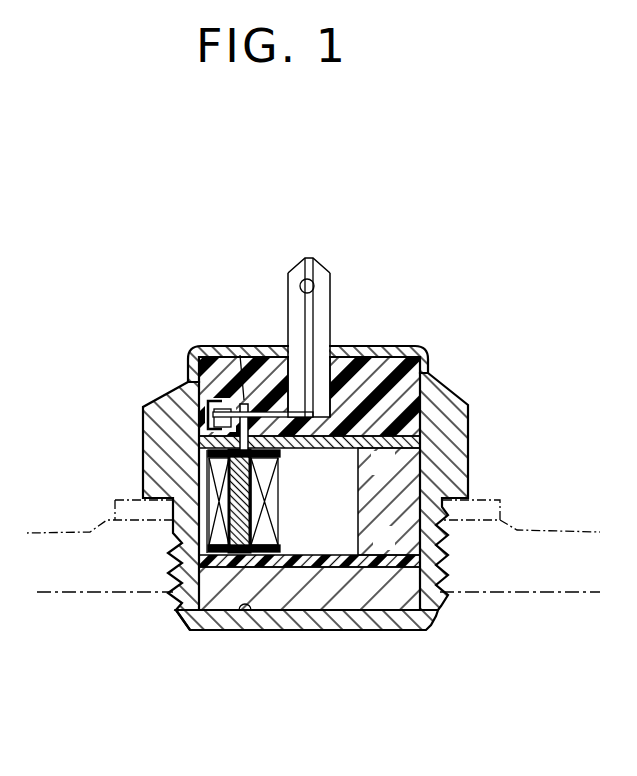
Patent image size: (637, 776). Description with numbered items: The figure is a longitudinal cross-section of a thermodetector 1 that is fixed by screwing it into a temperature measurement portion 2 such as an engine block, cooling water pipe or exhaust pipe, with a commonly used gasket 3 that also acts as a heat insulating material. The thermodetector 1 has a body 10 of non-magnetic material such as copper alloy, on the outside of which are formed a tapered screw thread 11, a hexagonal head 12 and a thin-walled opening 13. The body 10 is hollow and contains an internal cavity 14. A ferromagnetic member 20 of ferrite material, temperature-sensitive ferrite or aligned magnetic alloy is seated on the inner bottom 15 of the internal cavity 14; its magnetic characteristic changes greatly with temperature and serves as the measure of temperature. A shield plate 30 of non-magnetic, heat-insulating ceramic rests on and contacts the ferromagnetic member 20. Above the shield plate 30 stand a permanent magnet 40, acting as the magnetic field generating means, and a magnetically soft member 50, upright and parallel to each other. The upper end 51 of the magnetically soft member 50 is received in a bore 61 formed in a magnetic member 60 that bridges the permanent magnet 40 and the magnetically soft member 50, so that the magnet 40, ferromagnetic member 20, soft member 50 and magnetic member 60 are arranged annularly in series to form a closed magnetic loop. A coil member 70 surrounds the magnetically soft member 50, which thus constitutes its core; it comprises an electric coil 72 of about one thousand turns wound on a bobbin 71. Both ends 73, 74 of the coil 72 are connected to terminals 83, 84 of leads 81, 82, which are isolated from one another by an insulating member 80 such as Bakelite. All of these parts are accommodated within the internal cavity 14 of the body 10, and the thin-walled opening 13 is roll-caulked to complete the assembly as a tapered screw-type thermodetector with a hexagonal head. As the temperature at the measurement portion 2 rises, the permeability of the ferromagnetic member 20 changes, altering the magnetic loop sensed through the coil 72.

The thermodetector 1 is at (458, 348).
The temperature measurement portion 2 is at (55, 575).
The gasket 3 is at (113, 502).
The body 10 is at (460, 400).
The tapered screw thread 11 is at (440, 610).
The hexagonal head 12 is at (143, 418).
The thin-walled opening 13 is at (403, 346).
The internal cavity 14 is at (333, 548).
The inner bottom 15 is at (243, 612).
The ferromagnetic member 20 is at (385, 630).
The shield plate 30 is at (286, 572).
The permanent magnet 40 is at (402, 478).
The magnetically soft member 50 is at (190, 630).
The upper end 51 is at (202, 425).
The magnetic member 60 is at (430, 352).
The bore 61 is at (240, 355).
The coil member 70 is at (199, 480).
The bobbin 71 is at (232, 530).
The electric coil 72 is at (213, 500).
The coil end 73 is at (205, 400).
The coil end 74 is at (283, 456).
The insulating member 80 is at (372, 363).
The lead 81 is at (291, 280).
The lead 82 is at (331, 288).
The terminal 83 is at (228, 355).
The terminal 84 is at (297, 392).